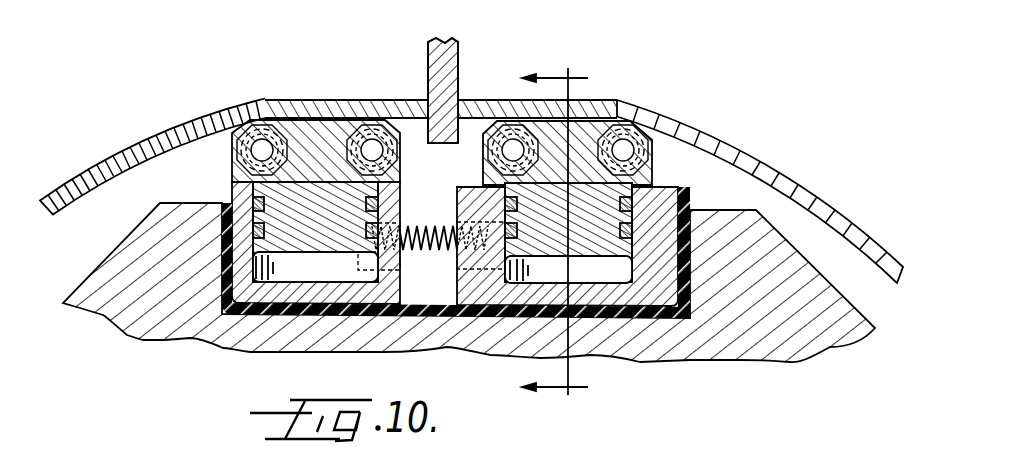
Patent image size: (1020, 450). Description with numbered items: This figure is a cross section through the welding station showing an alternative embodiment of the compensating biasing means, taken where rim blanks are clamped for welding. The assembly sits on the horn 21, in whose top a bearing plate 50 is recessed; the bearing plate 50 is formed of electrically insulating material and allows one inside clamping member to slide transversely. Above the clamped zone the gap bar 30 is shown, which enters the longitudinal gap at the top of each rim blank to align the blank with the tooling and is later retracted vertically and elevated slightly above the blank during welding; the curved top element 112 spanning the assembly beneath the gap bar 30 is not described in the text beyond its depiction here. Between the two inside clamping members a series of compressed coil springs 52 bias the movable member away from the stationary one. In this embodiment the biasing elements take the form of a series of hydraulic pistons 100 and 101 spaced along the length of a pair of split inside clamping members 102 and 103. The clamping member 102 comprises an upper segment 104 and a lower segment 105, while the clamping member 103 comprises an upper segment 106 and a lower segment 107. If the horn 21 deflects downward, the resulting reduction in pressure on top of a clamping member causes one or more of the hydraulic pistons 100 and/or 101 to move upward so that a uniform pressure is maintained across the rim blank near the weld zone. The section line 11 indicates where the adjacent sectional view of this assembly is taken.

The section line 11 is at (572, 234).
The horn 21 is at (97, 266).
The gap bar 30 is at (428, 49).
The bearing plate 50 is at (446, 318).
The compressed coil springs 52 is at (438, 224).
The hydraulic piston 100 is at (304, 248).
The hydraulic piston 101 is at (580, 251).
The split inside clamping member 102 is at (227, 152).
The split inside clamping member 103 is at (667, 143).
The upper segment 104 is at (232, 173).
The lower segment 105 is at (232, 262).
The upper segment 106 is at (655, 163).
The lower segment 107 is at (675, 272).
The top plate 112 is at (320, 99).